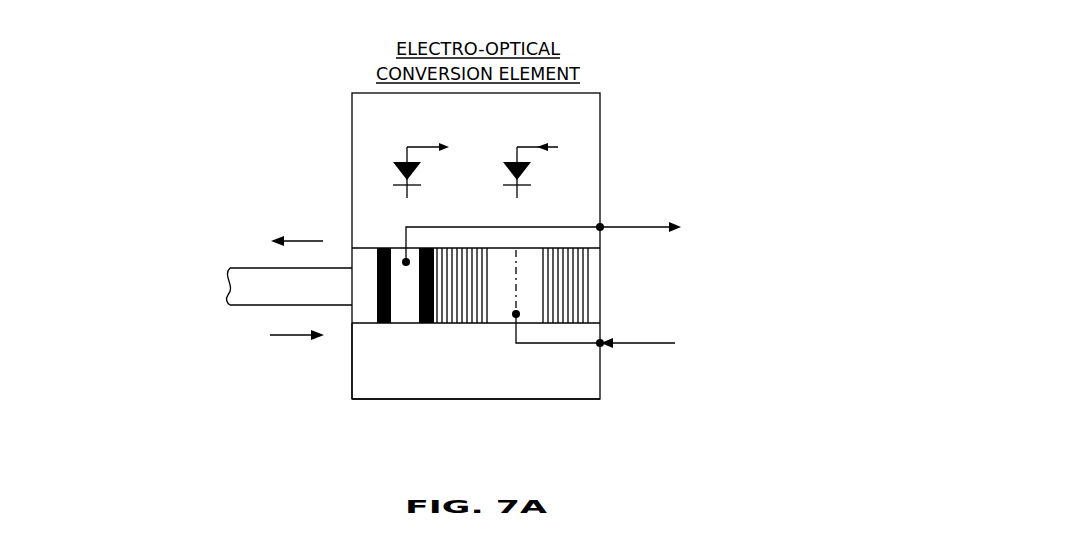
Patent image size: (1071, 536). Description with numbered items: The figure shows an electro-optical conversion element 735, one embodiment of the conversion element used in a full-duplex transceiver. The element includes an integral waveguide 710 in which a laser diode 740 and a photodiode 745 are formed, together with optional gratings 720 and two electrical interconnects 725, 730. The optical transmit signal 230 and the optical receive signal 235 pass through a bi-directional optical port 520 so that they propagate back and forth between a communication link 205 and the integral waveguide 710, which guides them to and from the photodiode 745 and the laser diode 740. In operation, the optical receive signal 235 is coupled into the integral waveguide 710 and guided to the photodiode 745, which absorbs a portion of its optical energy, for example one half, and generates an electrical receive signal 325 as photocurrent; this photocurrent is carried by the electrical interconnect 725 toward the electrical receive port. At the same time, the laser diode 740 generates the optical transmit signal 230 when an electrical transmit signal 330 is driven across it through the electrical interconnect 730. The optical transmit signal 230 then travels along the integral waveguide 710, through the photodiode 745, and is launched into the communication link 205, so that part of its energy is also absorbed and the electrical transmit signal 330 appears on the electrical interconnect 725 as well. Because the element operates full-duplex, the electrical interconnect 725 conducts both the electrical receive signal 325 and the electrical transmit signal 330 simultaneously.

The electro-optical conversion element 735 is at (666, 69).
The bi-directional optical port 520 is at (351, 258).
The integral waveguide 710 is at (367, 313).
The communication link 205 is at (232, 293).
The optical transmit signal 230 is at (272, 230).
The optical receive signal 235 is at (272, 342).
The photodiode 745 is at (407, 315).
The electrical interconnect 725 is at (440, 225).
The grating 720 is at (560, 247).
The laser diode 740 is at (500, 315).
The electrical interconnect 730 is at (563, 345).
The electrical receive signal 325 is at (641, 212).
The electrical transmit signal 330 is at (641, 247).